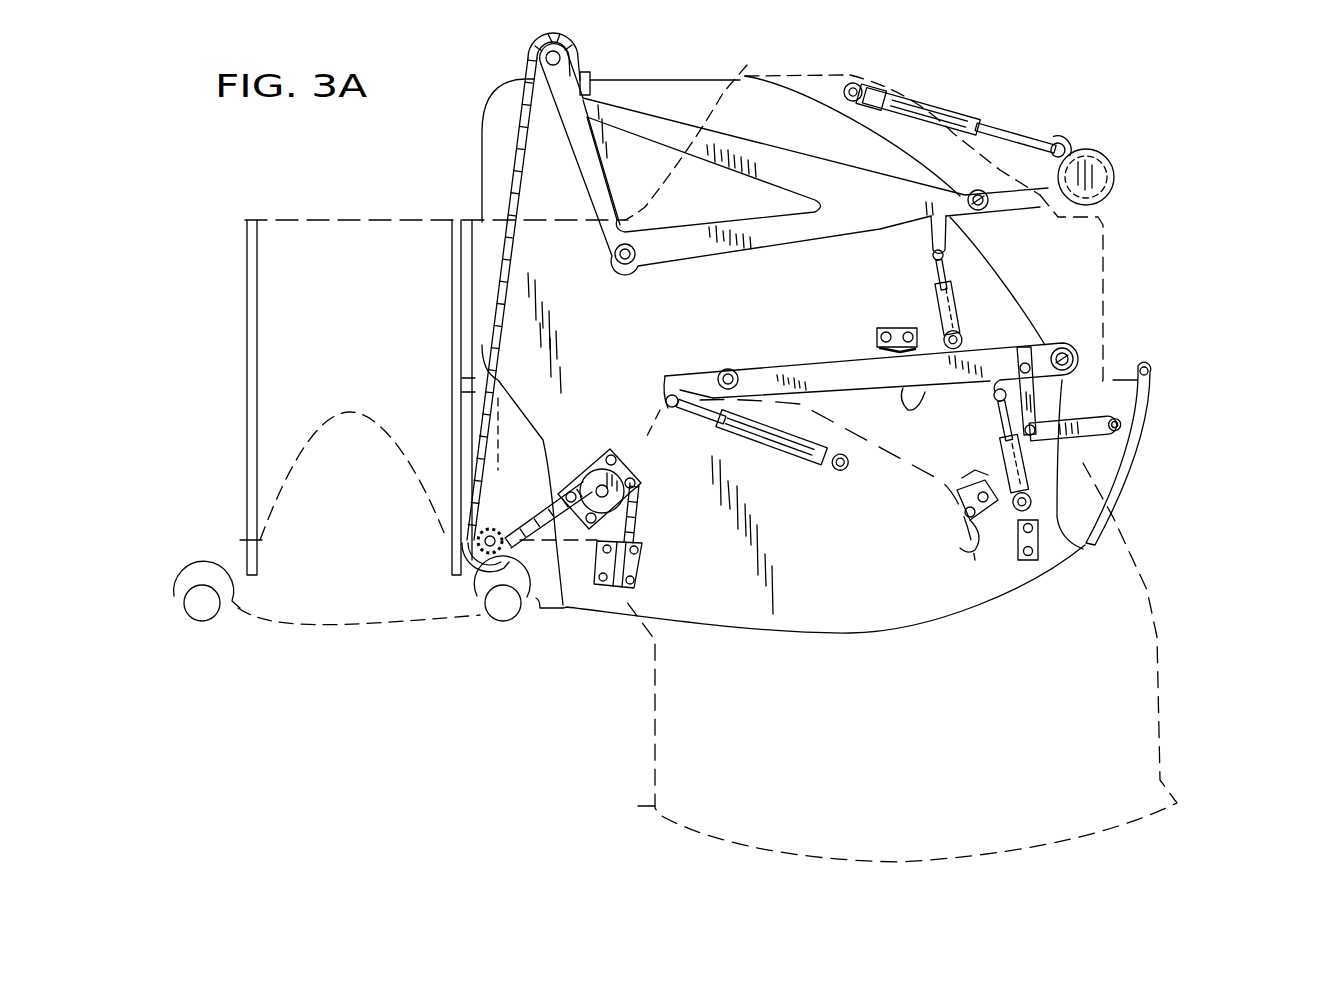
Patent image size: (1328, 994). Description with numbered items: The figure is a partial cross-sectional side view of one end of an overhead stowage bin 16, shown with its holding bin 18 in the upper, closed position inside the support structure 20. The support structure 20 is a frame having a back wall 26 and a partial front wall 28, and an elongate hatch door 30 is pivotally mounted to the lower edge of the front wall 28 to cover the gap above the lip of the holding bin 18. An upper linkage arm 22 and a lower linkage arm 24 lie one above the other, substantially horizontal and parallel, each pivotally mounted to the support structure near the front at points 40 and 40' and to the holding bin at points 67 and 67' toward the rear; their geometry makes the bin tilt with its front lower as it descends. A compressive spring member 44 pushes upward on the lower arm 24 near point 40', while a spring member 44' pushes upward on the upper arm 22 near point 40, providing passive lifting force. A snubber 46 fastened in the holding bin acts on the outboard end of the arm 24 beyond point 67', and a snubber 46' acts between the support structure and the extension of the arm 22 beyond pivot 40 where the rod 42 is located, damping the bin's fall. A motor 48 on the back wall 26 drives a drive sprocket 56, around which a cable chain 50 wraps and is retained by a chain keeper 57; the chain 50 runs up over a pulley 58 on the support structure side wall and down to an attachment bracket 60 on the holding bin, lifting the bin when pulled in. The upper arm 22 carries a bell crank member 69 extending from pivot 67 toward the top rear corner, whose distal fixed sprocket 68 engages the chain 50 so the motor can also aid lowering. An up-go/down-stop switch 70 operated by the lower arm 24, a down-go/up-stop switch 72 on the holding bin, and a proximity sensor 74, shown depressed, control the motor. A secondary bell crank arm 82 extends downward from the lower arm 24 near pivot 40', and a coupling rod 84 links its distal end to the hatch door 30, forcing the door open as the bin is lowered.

The overhead stowage bin 16 is at (788, 32).
The holding bin 18 is at (1003, 290).
The support structure 20 is at (745, 72).
The upper linkage arm 22 is at (853, 235).
The lower linkage arm 24 is at (857, 355).
The back wall 26 is at (452, 310).
The front wall 28 is at (1118, 273).
The hatch door 30 is at (1118, 472).
The pivotal attachment point 40 is at (1001, 226).
The pivotal attachment point 40' is at (1072, 327).
The rod 42 is at (1118, 163).
The spring member 44 is at (993, 449).
The spring member 44' is at (908, 283).
The snubber 46 is at (810, 502).
The snubber 46' is at (958, 90).
The motor 48 is at (473, 405).
The cable chain 50 is at (508, 312).
The drive sprocket 56 is at (513, 540).
The chain keeper 57 is at (478, 590).
The pulley 58 is at (596, 470).
The attachment bracket 60 is at (640, 568).
The pivotal attachment point 67 is at (634, 289).
The pivotal attachment point 67' is at (742, 347).
The fixed sprocket 68 is at (543, 84).
The bell crank member 69 is at (603, 197).
The up-go/down-stop switch 70 is at (980, 545).
The down-go/up-stop switch 72 is at (1040, 545).
The proximity sensor 74 is at (904, 353).
The secondary bell crank arm 82 is at (1113, 380).
The coupling rod 84 is at (1113, 497).